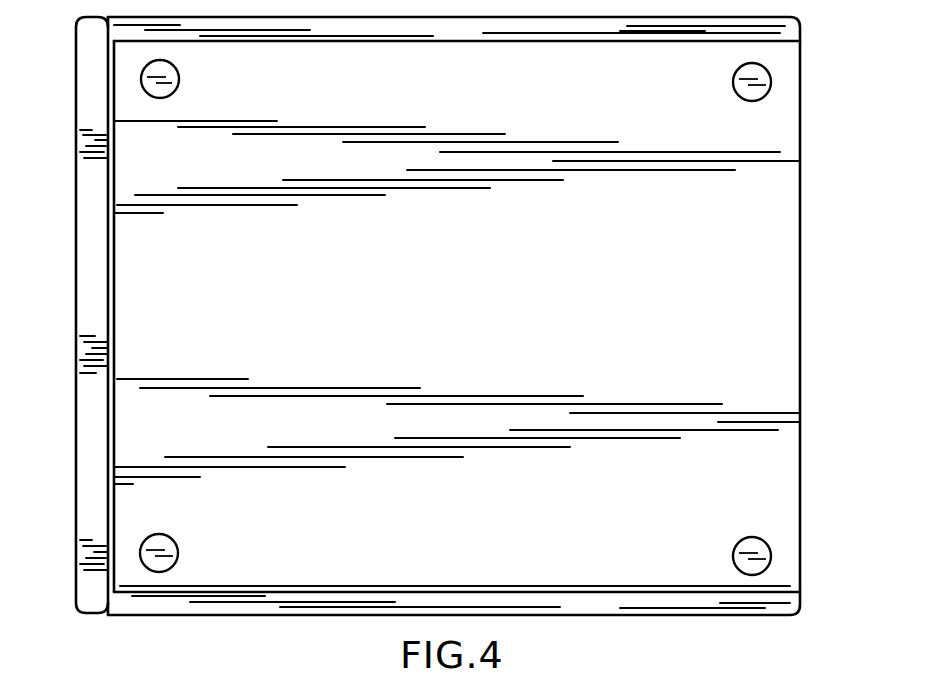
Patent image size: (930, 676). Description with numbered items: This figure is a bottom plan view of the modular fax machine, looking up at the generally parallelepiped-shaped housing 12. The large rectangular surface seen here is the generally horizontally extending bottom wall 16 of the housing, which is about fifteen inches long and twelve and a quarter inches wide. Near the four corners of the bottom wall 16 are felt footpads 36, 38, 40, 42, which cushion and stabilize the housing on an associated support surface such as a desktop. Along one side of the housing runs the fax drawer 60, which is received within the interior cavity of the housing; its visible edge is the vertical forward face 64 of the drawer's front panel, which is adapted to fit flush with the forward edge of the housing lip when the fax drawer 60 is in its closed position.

The housing 12 is at (745, 13).
The bottom wall 16 is at (426, 285).
The felt footpad 36 is at (142, 83).
The felt footpad 38 is at (769, 95).
The felt footpad 40 is at (770, 550).
The felt footpad 42 is at (145, 545).
The fax drawer 60 is at (72, 556).
The vertical forward face 64 is at (76, 400).